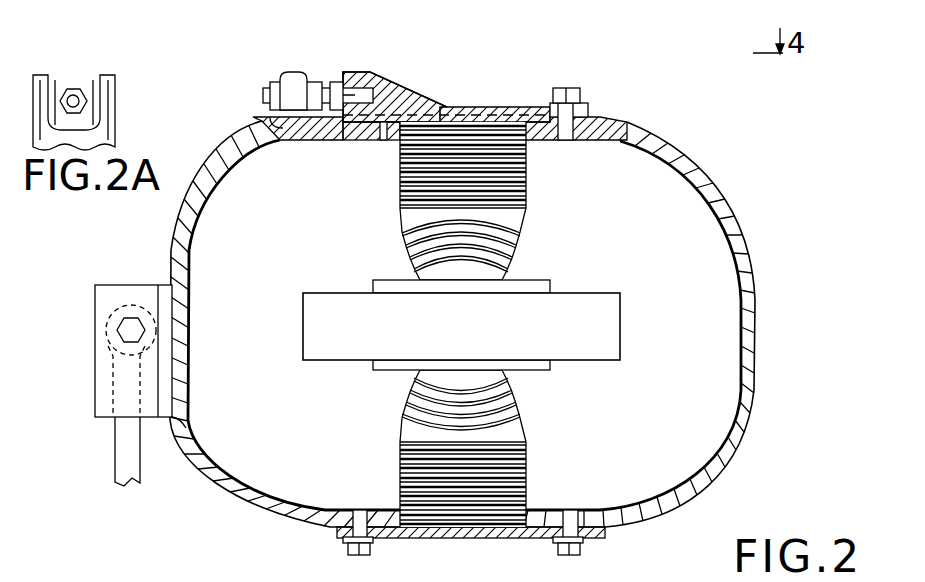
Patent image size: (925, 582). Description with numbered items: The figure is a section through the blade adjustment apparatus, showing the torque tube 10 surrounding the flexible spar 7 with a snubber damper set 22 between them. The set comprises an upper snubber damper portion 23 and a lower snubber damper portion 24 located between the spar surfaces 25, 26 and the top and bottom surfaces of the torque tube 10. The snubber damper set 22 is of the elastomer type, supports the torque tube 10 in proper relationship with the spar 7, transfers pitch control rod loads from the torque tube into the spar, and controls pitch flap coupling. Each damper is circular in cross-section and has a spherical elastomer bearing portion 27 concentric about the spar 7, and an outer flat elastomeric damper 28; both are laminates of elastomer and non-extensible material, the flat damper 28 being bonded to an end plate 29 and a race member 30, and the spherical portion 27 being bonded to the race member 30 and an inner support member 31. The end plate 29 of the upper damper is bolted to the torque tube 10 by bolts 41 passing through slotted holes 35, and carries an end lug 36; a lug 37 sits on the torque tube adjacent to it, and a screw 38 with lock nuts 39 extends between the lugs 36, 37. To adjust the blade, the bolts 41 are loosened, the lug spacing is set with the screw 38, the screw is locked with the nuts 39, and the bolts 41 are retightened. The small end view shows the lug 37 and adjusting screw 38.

In FIG. 2, the torque tube 10 is at (765, 304).
In FIG. 2, the spar 7 is at (603, 345).
In FIG. 2, the snubber damper set 22 is at (385, 427).
In FIG. 2, the upper snubber damper portion 23 is at (484, 201).
In FIG. 2, the lower snubber damper portion 24 is at (527, 457).
In FIG. 2, the spar surface 25 is at (563, 287).
In FIG. 2, the spar surface 26 is at (570, 366).
In FIG. 2, the spherical elastomer bearing portion 27 is at (405, 252).
In FIG. 2, the flat elastomeric damper 28 is at (397, 158).
In FIG. 2, the end plate 29 is at (510, 107).
In FIG. 2, the race member 30 is at (513, 222).
In FIG. 2, the inner support member 31 is at (503, 275).
In FIG. 2, the slotted hole 35 is at (590, 115).
In FIG. 2, the end lug 36 is at (367, 73).
In FIG. 2, the lug 37 is at (298, 73).
In FIG. 2A, the lug 37 is at (105, 77).
In FIG. 2, the screw 38 is at (327, 88).
In FIG. 2, the lock nut 39 is at (322, 142).
In FIG. 2, the bolt 41 is at (580, 92).